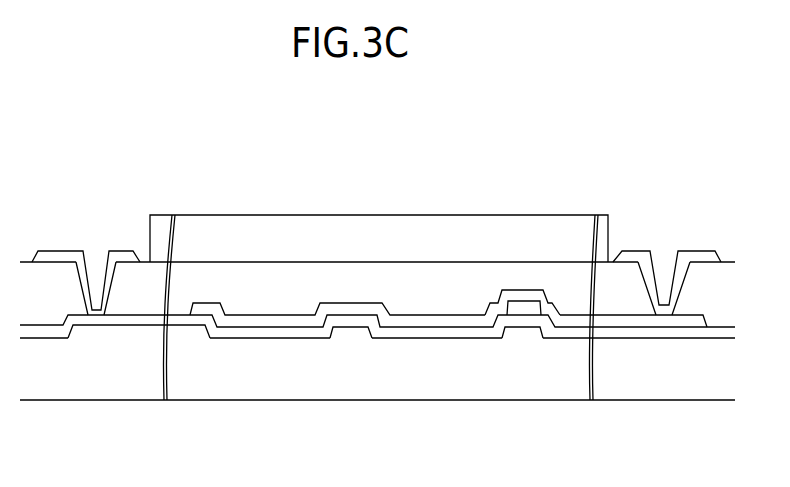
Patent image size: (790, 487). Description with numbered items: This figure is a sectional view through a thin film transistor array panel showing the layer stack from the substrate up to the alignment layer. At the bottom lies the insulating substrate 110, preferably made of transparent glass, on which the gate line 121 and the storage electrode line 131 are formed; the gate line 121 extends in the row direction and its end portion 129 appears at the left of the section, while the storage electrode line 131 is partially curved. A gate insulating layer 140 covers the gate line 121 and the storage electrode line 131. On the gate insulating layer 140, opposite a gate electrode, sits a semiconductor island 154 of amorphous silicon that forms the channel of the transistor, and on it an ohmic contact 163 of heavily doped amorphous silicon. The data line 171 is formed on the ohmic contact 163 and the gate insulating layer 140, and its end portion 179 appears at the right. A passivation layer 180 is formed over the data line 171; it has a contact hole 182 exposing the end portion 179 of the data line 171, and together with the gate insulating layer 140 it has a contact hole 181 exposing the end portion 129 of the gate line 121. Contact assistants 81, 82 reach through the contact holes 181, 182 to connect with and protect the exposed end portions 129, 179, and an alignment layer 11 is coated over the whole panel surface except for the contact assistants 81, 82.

The alignment layer 11 is at (388, 232).
The contact assistant 81 is at (55, 257).
The contact assistant 82 is at (707, 257).
The insulating substrate 110 is at (392, 385).
The gate line 121 is at (190, 330).
The end portion of gate line 129 is at (118, 330).
The storage electrode line 131 is at (358, 333).
The gate insulating layer 140 is at (252, 330).
The semiconductor island 154 is at (528, 310).
The ohmic contact 163 is at (513, 300).
The data line 171 is at (298, 320).
The end portion of data line 179 is at (616, 323).
The passivation layer 180 is at (307, 277).
The contact hole 181 is at (96, 262).
The contact hole 182 is at (662, 260).